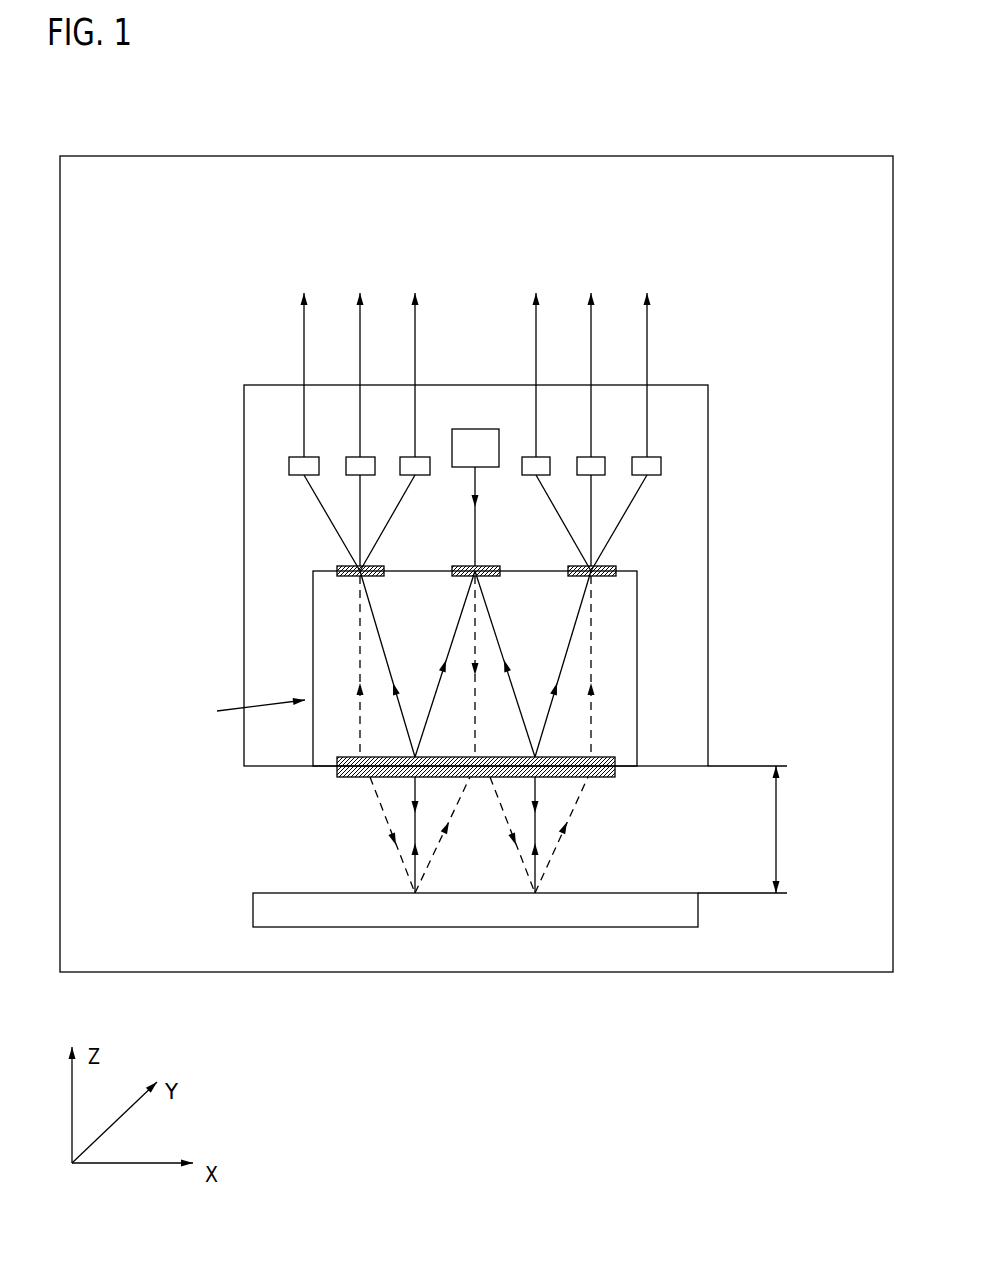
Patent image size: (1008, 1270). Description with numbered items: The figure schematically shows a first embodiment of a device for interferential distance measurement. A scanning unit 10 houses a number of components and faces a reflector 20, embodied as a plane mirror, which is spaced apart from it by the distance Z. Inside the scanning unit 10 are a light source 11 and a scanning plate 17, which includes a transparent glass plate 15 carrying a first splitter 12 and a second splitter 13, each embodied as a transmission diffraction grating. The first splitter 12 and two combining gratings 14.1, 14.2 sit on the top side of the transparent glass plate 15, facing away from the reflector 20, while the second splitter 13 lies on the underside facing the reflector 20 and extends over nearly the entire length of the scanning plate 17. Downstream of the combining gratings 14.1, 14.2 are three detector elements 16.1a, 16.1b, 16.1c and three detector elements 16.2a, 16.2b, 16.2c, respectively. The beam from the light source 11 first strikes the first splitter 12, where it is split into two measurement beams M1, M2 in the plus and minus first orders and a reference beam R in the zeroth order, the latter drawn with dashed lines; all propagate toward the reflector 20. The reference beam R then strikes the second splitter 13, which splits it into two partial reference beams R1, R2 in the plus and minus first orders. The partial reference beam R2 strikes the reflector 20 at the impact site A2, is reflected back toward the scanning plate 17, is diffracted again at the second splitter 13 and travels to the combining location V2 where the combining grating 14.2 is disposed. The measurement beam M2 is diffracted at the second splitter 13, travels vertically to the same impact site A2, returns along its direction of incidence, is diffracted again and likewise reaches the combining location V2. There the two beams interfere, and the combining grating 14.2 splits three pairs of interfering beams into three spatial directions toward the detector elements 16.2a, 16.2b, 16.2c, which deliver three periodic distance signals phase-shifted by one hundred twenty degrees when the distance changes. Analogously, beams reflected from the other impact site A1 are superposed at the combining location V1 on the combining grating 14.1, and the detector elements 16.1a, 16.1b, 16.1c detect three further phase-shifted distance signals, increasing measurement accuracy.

The scanning unit 10 is at (698, 490).
The light source 11 is at (476, 440).
The first splitter 12 is at (527, 543).
The second splitter 13 is at (370, 778).
The combining grating 14.1 is at (337, 566).
The combining grating 14.2 is at (616, 558).
The transparent glass plate 15 is at (628, 690).
The detector element 16.1a is at (298, 462).
The detector element 16.1b is at (355, 462).
The detector element 16.1c is at (405, 462).
The detector element 16.2a is at (542, 462).
The detector element 16.2b is at (597, 462).
The detector element 16.2c is at (652, 462).
The scanning plate 17 is at (249, 709).
The reflector 20 is at (683, 912).
The combining location V1 is at (357, 578).
The combining location V2 is at (593, 580).
The measurement beam M1 is at (448, 663).
The measurement beam M2 is at (503, 658).
The reference beam R is at (475, 712).
The partial reference beam R1 is at (455, 812).
The partial reference beam R2 is at (513, 893).
The impact site A1 is at (415, 897).
The impact site A2 is at (535, 895).
The distance Z is at (750, 829).